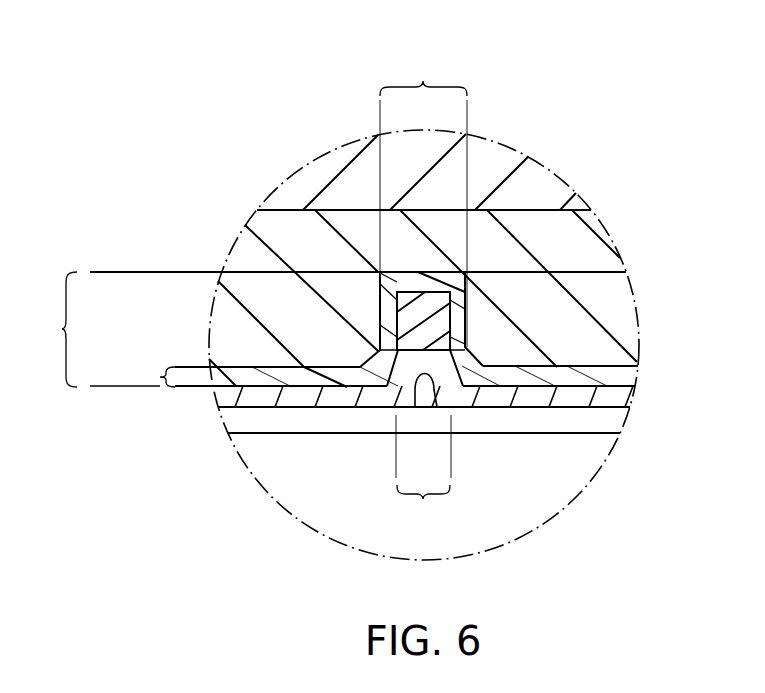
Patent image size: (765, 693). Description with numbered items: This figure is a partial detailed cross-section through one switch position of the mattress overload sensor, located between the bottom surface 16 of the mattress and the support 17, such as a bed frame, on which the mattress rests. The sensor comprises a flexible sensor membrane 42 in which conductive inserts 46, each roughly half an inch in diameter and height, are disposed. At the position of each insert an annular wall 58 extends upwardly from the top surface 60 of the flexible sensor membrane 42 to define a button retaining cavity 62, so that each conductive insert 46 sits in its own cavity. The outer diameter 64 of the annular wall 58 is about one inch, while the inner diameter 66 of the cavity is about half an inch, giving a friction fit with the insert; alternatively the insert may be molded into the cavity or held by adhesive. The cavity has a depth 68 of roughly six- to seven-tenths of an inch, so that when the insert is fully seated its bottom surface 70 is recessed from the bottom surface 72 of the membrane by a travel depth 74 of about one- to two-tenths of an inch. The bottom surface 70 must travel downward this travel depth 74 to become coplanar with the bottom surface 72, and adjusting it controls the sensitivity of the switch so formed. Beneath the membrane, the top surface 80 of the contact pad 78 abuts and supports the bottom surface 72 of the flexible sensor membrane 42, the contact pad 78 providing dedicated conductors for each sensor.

The bottom surface 16 is at (240, 366).
The support 17 is at (597, 418).
The flexible sensor membrane 42 is at (618, 373).
The conductive insert 46 is at (425, 313).
The annular wall 58 is at (455, 288).
The top surface 60 is at (593, 366).
The button retaining cavity 62 is at (445, 372).
The outer diameter 64 is at (423, 197).
The inner diameter 66 is at (423, 473).
The depth 68 is at (92, 329).
The bottom surface 70 is at (402, 353).
The bottom surface 72 is at (532, 387).
The travel depth 74 is at (161, 376).
The contact pad 78 is at (230, 395).
The top surface 80 is at (415, 407).